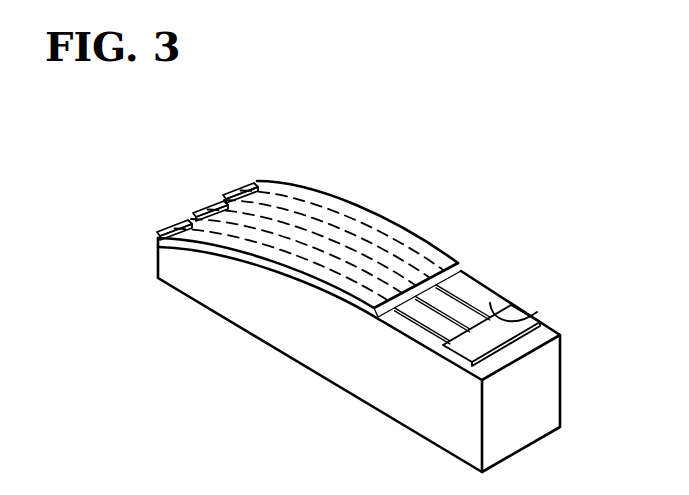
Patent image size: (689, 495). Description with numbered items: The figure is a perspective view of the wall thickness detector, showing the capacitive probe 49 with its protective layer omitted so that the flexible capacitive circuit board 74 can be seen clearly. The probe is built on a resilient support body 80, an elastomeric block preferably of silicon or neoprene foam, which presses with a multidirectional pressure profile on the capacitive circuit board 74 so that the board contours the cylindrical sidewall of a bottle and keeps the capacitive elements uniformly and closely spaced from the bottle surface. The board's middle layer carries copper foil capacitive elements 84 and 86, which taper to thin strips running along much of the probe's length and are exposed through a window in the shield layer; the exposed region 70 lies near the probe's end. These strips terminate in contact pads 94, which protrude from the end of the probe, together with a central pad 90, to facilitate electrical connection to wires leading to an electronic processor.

The capacitive probe 49 is at (346, 281).
The contact region 70 is at (527, 302).
The flexible capacitive circuit board 74 is at (416, 233).
The resilient support body 80 is at (341, 352).
The capacitive element 84 is at (537, 320).
The capacitive element 86 is at (556, 331).
The center terminal tab 90 is at (205, 208).
The contact pad 94 is at (229, 186).